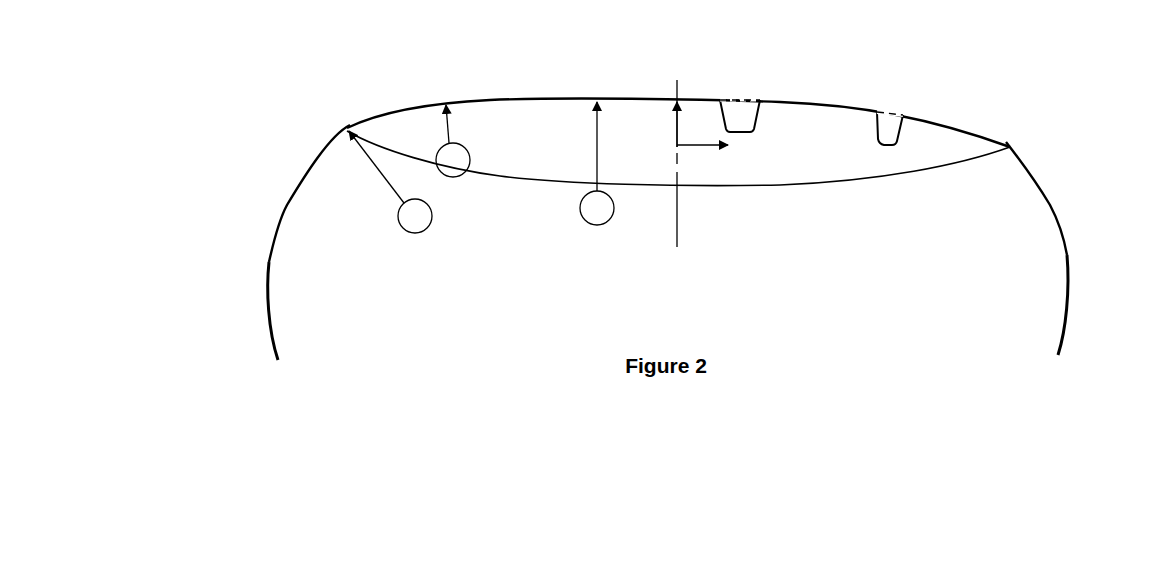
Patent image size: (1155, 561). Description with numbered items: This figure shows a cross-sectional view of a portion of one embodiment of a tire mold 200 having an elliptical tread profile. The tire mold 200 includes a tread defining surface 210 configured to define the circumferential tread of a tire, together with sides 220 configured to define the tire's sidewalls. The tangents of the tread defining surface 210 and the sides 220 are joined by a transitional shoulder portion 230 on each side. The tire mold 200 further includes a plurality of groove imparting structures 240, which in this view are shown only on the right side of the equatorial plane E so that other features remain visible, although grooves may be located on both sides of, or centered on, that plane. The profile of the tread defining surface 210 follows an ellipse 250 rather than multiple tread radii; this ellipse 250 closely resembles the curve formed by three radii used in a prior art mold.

The tire mold 200 is at (1071, 88).
The tread defining surface 210 is at (547, 97).
The sides 220 is at (268, 262).
The transitional shoulder portion 230 is at (300, 182).
The groove imparting structures 240 is at (736, 126).
The ellipse 250 is at (815, 185).